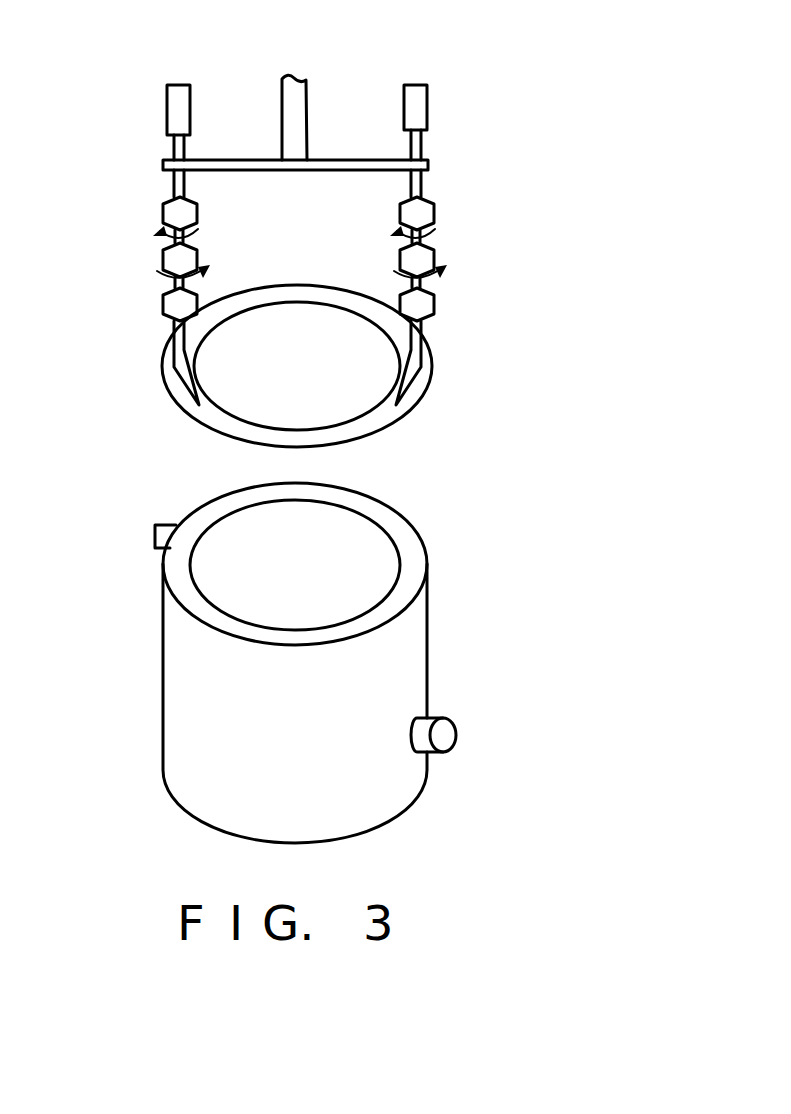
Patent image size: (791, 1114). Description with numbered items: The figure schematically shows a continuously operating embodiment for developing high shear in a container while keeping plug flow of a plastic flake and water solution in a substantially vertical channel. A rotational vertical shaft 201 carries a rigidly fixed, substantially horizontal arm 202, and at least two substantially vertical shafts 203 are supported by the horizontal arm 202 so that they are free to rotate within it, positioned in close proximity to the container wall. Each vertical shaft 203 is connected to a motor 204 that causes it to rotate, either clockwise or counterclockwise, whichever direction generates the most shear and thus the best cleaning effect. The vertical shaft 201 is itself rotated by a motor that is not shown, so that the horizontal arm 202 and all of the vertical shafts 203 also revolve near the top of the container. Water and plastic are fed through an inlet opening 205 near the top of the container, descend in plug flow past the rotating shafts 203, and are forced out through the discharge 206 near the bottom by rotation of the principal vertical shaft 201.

The rotational vertical shaft 201 is at (307, 80).
The horizontal arm 202 is at (361, 158).
The vertical shafts 203 is at (173, 187).
The motor 204 is at (427, 103).
The inlet opening 205 is at (153, 540).
The discharge 206 is at (460, 732).